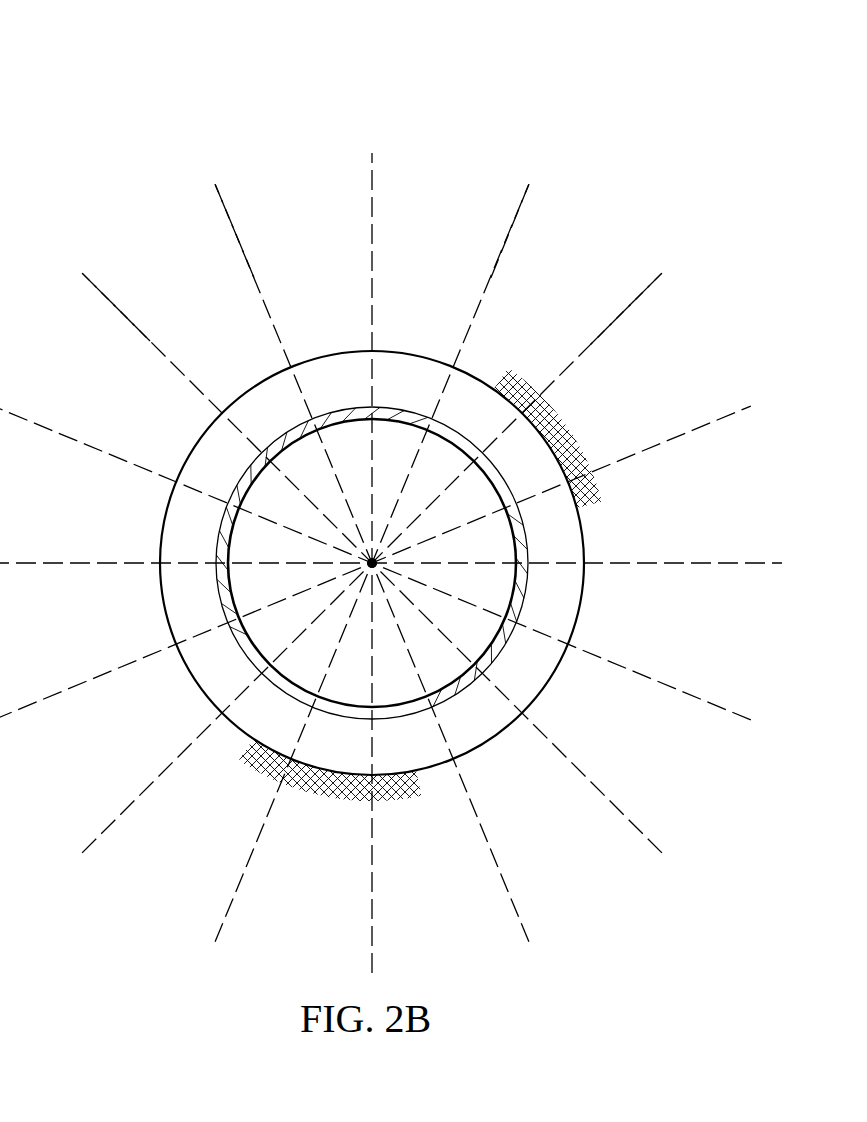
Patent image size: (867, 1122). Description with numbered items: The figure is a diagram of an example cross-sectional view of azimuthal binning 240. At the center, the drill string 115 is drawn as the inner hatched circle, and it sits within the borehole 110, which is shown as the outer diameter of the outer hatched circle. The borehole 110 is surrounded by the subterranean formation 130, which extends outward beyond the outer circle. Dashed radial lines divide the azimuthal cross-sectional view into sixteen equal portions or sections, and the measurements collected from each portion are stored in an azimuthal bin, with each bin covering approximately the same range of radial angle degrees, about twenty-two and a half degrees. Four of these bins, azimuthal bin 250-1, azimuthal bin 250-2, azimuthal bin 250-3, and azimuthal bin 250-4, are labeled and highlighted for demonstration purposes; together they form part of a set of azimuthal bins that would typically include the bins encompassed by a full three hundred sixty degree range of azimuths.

The azimuthal binning 240 is at (115, 80).
The azimuthal bin 250-1 is at (152, 238).
The azimuthal bin 250-2 is at (297, 186).
The azimuthal bin 250-3 is at (447, 188).
The azimuthal bin 250-4 is at (592, 236).
The borehole 110 is at (168, 516).
The drill string 115 is at (233, 643).
The subterranean formation 130 is at (142, 906).